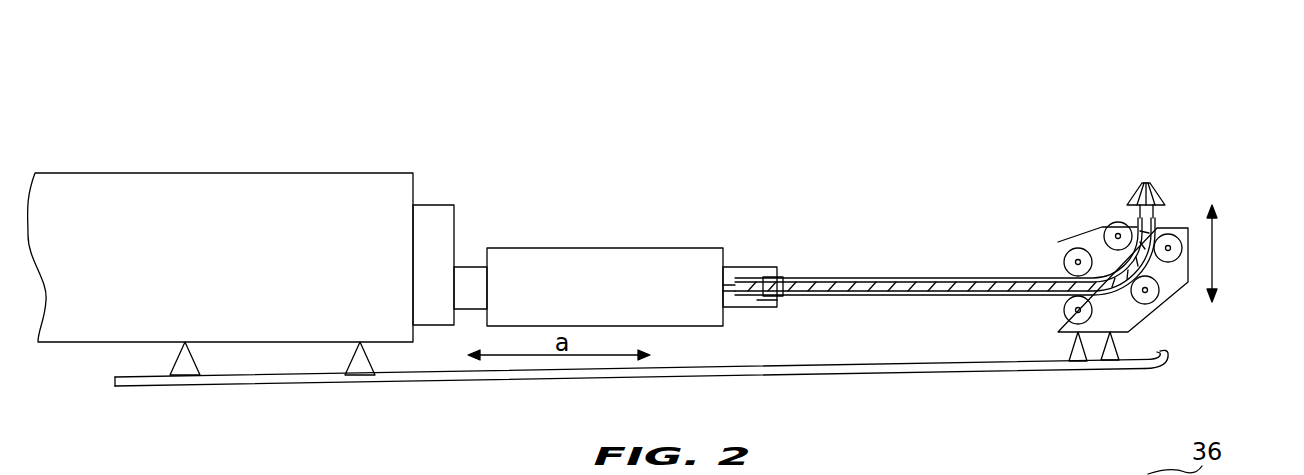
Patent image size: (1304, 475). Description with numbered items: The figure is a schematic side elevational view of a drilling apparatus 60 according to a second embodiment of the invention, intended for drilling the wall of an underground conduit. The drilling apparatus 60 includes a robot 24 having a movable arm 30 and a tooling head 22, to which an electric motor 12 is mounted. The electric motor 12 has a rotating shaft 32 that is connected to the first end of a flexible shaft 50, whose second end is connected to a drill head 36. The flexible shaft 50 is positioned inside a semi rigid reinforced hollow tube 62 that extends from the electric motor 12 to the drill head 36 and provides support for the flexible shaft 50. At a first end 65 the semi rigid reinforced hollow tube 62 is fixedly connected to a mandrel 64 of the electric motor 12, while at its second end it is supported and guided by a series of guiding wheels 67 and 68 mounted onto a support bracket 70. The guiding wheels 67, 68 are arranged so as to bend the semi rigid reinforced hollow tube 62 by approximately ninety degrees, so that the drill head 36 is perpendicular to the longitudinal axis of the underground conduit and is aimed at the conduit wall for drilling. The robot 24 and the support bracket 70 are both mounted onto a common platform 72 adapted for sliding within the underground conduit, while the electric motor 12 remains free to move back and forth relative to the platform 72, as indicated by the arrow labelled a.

The drilling apparatus 60 is at (893, 116).
The robot 24 is at (270, 192).
The movable arm 30 is at (433, 222).
The tooling head 22 is at (478, 273).
The electric motor 12 is at (605, 250).
The rotating shaft 32 is at (730, 285).
The mandrel 64 is at (777, 283).
The first end 65 is at (768, 298).
The semi rigid reinforced hollow tube 62 is at (973, 278).
The support bracket 70 is at (1178, 227).
The guiding wheels 67 is at (1076, 247).
The guiding wheels 68 is at (1168, 248).
The drill head 36 is at (1150, 181).
The flexible shaft 50 is at (644, 349).
The common platform 72 is at (262, 380).